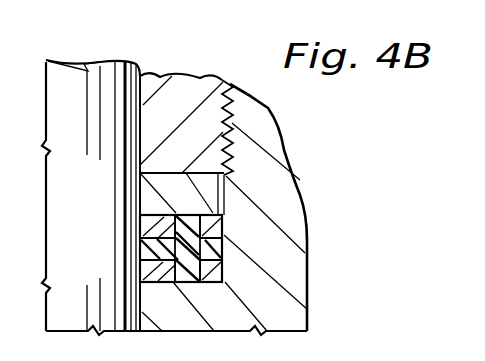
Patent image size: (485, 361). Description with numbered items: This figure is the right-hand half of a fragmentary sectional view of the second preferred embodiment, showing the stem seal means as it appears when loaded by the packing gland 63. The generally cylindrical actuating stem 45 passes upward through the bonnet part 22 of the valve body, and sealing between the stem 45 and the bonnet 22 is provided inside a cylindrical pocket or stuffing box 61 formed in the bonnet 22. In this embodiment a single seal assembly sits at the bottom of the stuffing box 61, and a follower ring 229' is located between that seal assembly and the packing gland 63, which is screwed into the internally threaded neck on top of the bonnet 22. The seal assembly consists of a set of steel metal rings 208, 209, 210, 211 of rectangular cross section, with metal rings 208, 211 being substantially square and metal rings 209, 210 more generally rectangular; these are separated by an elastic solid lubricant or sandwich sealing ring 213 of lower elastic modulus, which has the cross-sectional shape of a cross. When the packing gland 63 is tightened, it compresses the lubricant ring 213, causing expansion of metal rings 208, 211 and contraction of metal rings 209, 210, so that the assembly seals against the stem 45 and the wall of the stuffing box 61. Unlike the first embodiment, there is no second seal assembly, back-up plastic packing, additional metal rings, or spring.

The actuating stem 45 is at (105, 62).
The packing gland 63 is at (184, 95).
The follower ring 229' is at (292, 137).
The metal ring 208 is at (240, 230).
The bonnet part 22 is at (229, 307).
The stuffing box 61 is at (223, 252).
The metal ring 209 is at (140, 224).
The lubricant ring 213 is at (140, 249).
The metal ring 210 is at (140, 268).
The metal ring 211 is at (223, 269).